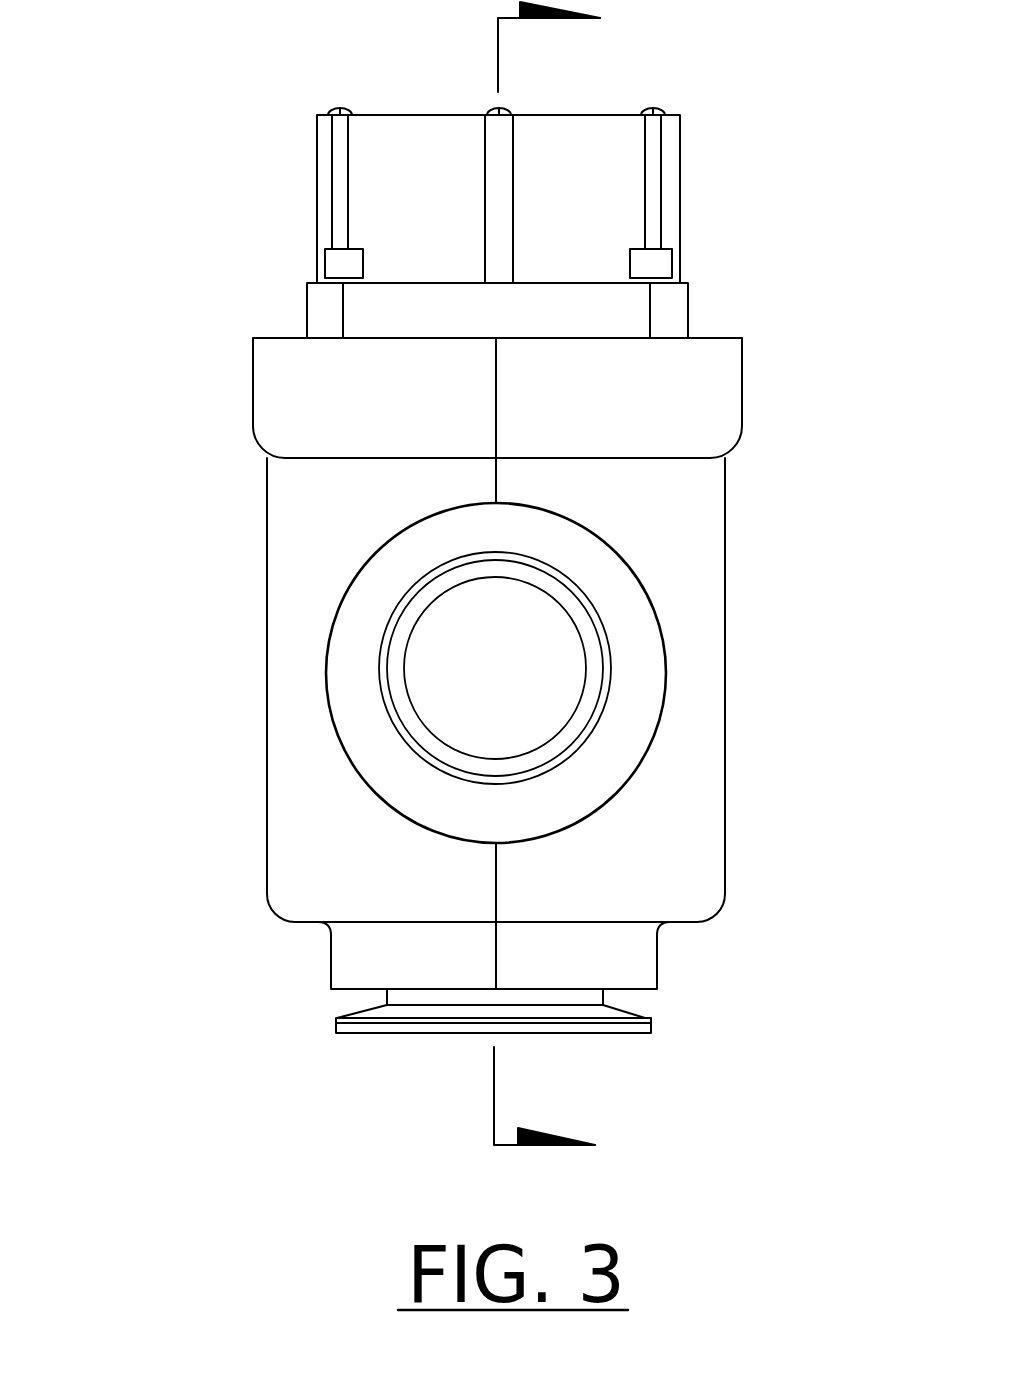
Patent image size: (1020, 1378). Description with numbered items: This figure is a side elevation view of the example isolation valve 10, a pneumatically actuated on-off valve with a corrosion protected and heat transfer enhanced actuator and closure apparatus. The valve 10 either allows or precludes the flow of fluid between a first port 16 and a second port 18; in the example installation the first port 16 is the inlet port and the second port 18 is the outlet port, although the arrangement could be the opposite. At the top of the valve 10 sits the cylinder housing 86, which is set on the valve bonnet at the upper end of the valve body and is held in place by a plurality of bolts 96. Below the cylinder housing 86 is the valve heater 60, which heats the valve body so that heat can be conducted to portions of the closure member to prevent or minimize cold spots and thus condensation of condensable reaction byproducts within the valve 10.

The isolation valve 10 is at (273, 125).
The first port 16 is at (585, 648).
The second port 18 is at (413, 1033).
The valve heater 60 is at (742, 397).
The cylinder housing 86 is at (318, 225).
The bolts 96 is at (323, 265).